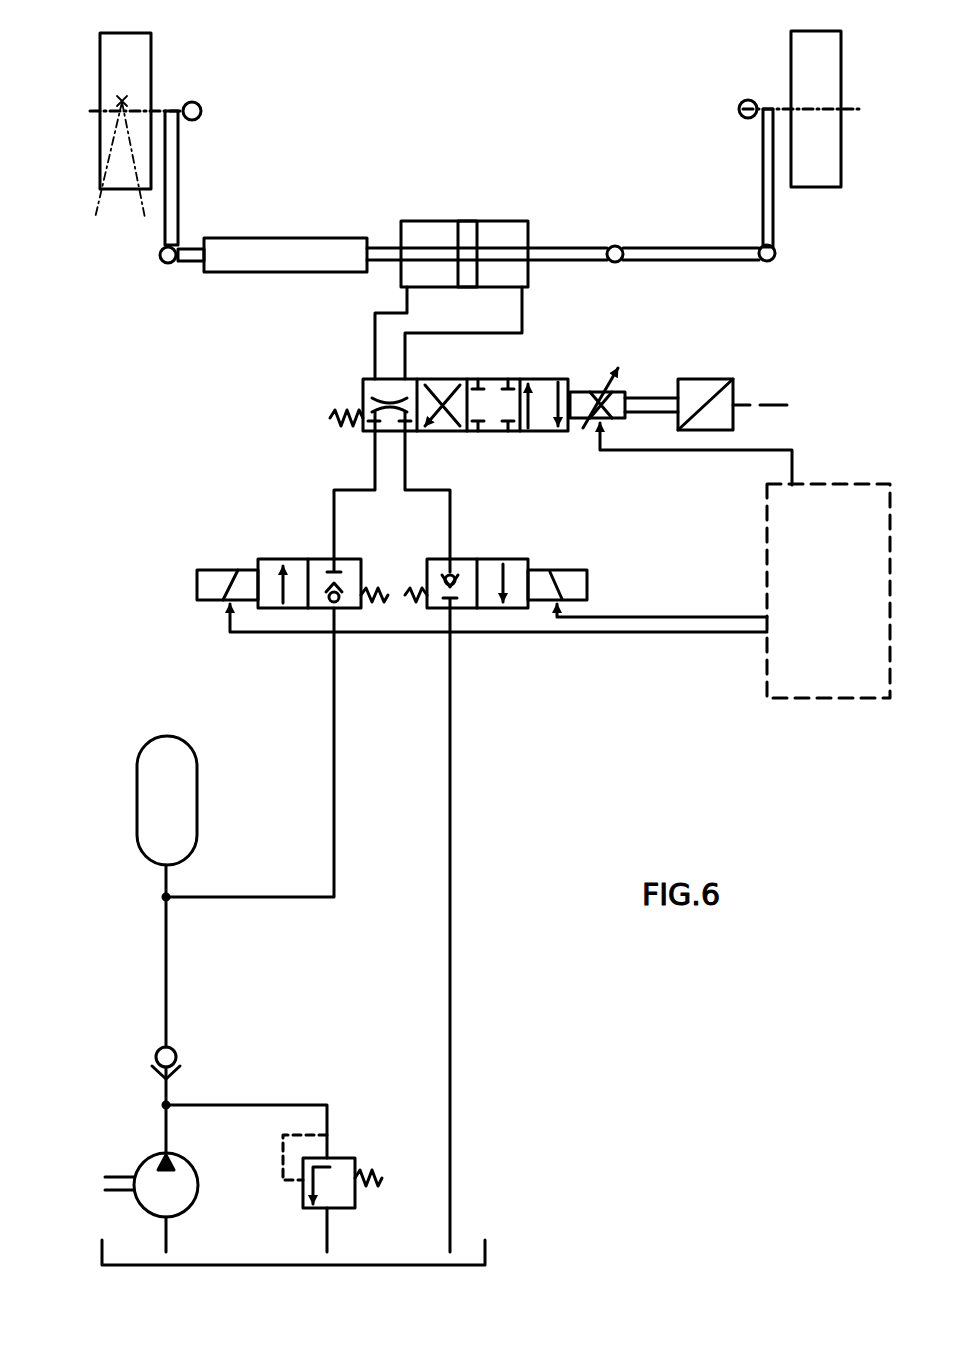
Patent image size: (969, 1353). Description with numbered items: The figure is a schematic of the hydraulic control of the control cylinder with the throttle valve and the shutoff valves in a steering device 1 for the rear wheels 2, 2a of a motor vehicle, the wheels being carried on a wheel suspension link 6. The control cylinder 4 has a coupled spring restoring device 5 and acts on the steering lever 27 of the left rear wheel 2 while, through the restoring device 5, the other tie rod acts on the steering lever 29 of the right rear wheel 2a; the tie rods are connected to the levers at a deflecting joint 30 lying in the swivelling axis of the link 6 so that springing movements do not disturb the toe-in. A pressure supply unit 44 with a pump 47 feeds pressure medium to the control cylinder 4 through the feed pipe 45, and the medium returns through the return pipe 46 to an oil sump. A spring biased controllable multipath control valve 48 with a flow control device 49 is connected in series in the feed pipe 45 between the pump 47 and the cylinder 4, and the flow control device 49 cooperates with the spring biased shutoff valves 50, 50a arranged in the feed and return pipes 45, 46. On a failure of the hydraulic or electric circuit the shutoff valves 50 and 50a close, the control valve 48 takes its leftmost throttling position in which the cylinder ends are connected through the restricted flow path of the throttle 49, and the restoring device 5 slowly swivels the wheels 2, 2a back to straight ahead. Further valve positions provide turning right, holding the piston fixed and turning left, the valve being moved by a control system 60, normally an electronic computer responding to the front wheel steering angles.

The steering device 1 is at (413, 117).
The rear wheel 2 is at (835, 158).
The rear wheel 2a is at (107, 183).
The control cylinder 4 is at (420, 221).
The restoring device 5 is at (277, 220).
The wheel suspension link 6 is at (467, 213).
The steering lever 27 is at (763, 180).
The steering lever 29 is at (177, 177).
The deflecting joint 30 is at (168, 263).
The pressure supply unit 44 is at (120, 1073).
The feed pipe 45 is at (334, 817).
The return pipe 46 is at (445, 1130).
The pump 47 is at (170, 1202).
The multipath control valve 48 is at (510, 455).
The flow control device 49 is at (363, 393).
The shutoff valve 50 is at (300, 617).
The shutoff valve 50a is at (510, 635).
The control system 60 is at (814, 616).